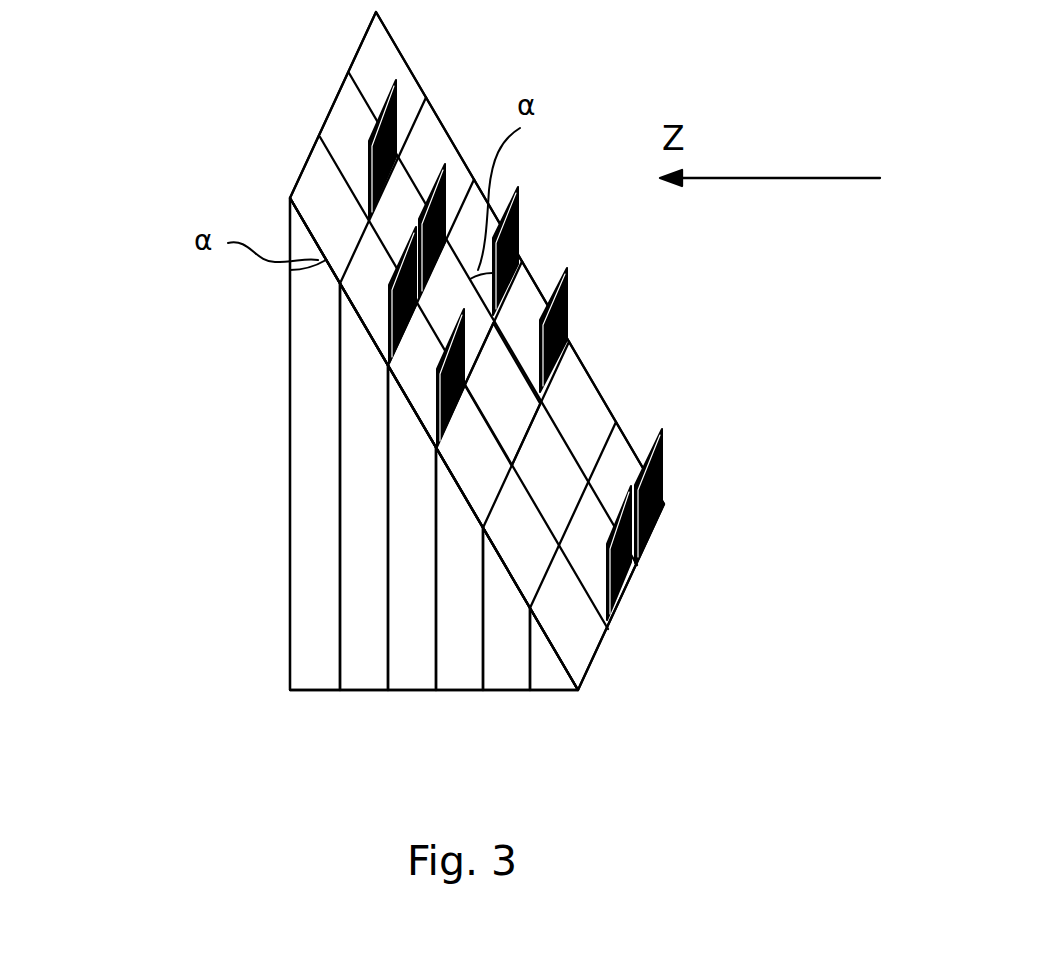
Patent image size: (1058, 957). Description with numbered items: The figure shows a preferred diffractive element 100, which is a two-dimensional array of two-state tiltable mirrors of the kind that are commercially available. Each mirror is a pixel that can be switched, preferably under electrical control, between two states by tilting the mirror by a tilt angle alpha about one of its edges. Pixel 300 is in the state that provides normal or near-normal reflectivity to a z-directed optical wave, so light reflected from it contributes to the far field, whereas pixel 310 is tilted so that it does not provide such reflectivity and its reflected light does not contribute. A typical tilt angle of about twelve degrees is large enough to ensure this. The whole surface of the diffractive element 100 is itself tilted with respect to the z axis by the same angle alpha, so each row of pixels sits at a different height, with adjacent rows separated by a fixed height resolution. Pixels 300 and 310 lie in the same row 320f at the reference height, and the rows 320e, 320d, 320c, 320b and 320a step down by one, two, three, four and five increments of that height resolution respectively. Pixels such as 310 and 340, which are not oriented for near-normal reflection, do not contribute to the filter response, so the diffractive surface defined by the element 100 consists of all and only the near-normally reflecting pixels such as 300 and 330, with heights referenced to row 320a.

The diffractive element 100 is at (165, 158).
The pixel 300 is at (655, 490).
The pixel 310 is at (576, 638).
The row 320a is at (340, 403).
The row 320b is at (387, 493).
The row 320c is at (436, 583).
The row 320d is at (483, 645).
The row 320e is at (530, 668).
The row 320f is at (583, 668).
The pixel 330 is at (558, 325).
The pixel 340 is at (497, 393).